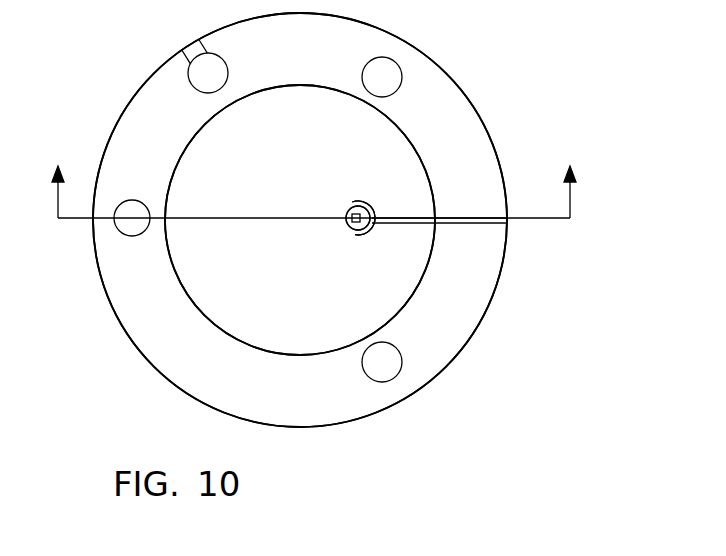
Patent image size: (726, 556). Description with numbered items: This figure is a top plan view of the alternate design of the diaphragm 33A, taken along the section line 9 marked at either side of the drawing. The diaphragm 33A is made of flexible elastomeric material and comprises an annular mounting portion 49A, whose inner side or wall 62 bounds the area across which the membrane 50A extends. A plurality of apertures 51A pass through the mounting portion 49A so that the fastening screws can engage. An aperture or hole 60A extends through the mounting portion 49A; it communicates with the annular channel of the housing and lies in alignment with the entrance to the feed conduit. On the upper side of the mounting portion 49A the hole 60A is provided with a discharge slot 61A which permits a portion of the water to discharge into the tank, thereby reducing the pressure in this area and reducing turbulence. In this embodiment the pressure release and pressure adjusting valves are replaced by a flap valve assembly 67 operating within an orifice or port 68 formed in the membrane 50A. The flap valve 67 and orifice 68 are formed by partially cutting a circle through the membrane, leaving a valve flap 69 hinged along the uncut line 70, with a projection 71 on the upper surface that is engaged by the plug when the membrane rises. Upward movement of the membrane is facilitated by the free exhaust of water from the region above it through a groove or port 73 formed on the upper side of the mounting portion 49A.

The diaphragm 33A is at (495, 128).
The annular mounting portion 49A is at (110, 256).
The membrane 50A is at (222, 266).
The apertures 51A is at (388, 76).
The aperture or hole 60A is at (218, 72).
The discharge slot 61A is at (197, 47).
The inner side or wall 62 is at (191, 152).
The flap valve assembly 67 is at (376, 203).
The orifice or port 68 is at (354, 208).
The valve flap 69 is at (360, 232).
The uncut line 70 is at (377, 224).
The projection 71 is at (350, 222).
The groove or port 73 is at (490, 213).
The section line 9- 9 is at (309, 179).